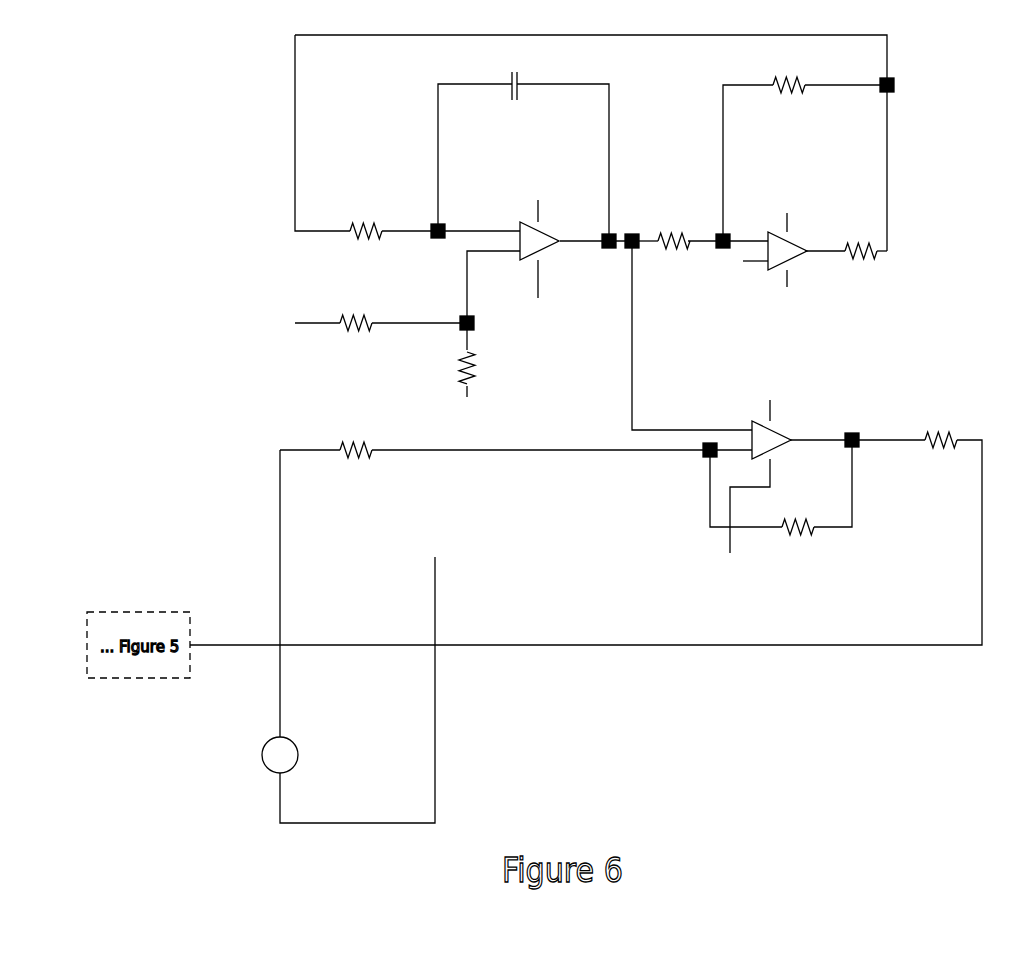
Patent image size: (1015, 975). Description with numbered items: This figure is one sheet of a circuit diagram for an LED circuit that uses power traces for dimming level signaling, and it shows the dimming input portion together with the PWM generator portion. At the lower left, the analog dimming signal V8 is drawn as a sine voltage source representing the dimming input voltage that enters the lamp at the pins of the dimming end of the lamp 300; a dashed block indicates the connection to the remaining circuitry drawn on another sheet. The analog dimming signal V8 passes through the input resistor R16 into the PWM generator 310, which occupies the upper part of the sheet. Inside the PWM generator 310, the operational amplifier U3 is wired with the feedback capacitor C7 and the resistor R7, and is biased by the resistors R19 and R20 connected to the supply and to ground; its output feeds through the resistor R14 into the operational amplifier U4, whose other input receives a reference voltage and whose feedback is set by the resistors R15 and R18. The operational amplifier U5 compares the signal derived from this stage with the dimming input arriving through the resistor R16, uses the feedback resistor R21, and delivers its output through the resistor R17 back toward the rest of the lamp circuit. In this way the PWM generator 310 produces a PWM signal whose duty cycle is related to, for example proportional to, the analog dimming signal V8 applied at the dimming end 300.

The dimming end of the lamp 300 is at (210, 845).
The PWM generator 310 is at (595, 600).
The resistor R7 is at (366, 234).
The capacitor C7 is at (511, 86).
The op-amp U3 is at (545, 271).
The resistor R14 is at (672, 244).
The resistor R15 is at (790, 87).
The op-amp U4 is at (766, 231).
The resistor R18 is at (861, 251).
The resistor R19 is at (345, 325).
The resistor R20 is at (447, 368).
The op-amp U5 is at (762, 499).
The resistor R17 is at (941, 442).
The resistor R21 is at (796, 530).
The resistor R16 is at (357, 454).
The analog dimming signal V8 is at (327, 759).